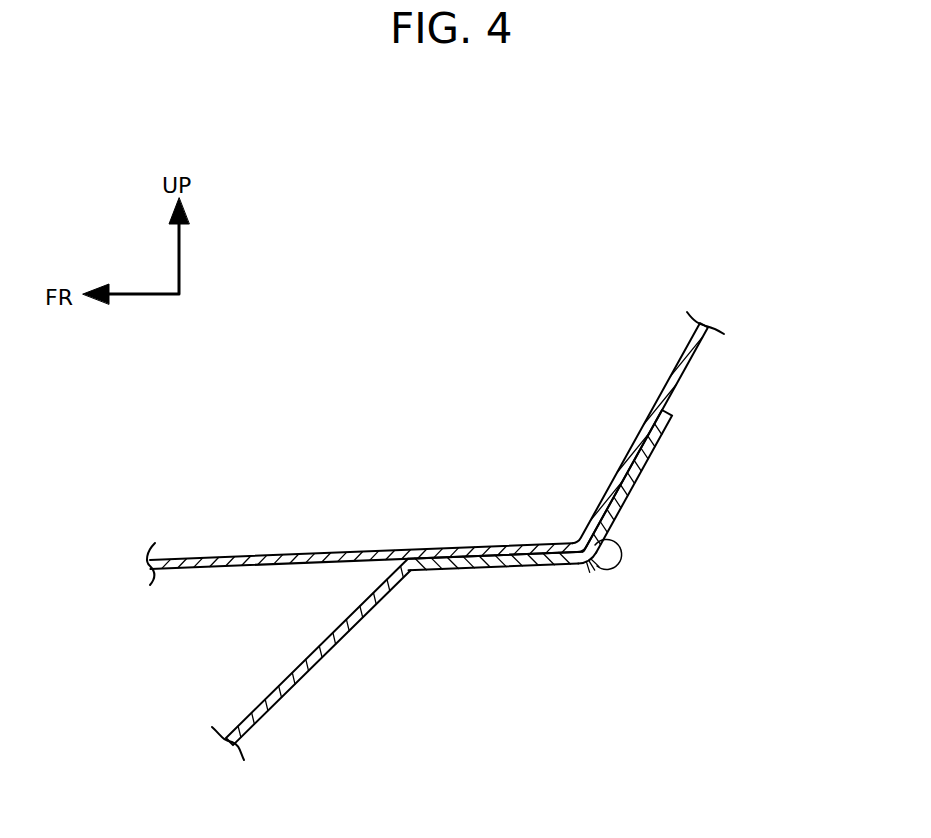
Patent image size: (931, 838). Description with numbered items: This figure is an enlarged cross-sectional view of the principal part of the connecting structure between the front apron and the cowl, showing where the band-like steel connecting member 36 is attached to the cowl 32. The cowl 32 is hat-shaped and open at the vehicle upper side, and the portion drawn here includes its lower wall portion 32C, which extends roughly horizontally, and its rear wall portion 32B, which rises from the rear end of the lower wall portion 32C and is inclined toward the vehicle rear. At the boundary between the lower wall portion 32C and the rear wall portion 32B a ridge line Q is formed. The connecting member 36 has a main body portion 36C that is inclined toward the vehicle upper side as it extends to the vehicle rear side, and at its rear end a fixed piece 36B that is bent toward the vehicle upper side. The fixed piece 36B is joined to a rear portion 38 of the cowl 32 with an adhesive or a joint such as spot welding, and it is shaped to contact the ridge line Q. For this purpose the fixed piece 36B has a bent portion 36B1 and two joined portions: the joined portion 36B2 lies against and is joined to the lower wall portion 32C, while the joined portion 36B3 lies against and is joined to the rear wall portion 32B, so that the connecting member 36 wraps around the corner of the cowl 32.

The cowl 32 is at (463, 448).
The rear wall portion 32B is at (663, 388).
The lower wall portion 32C is at (278, 553).
The connecting member 36 is at (502, 604).
The fixed piece 36B is at (600, 563).
The bent portion 36B1 is at (592, 568).
The joined portion 36B2 is at (492, 573).
The joined portion 36B3 is at (675, 536).
The main body portion 36C is at (328, 660).
The rear portion 38 is at (564, 524).
The ridge line Q is at (600, 535).